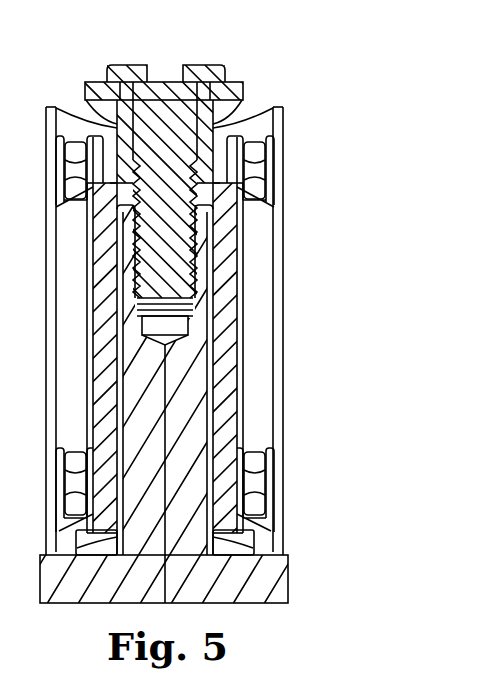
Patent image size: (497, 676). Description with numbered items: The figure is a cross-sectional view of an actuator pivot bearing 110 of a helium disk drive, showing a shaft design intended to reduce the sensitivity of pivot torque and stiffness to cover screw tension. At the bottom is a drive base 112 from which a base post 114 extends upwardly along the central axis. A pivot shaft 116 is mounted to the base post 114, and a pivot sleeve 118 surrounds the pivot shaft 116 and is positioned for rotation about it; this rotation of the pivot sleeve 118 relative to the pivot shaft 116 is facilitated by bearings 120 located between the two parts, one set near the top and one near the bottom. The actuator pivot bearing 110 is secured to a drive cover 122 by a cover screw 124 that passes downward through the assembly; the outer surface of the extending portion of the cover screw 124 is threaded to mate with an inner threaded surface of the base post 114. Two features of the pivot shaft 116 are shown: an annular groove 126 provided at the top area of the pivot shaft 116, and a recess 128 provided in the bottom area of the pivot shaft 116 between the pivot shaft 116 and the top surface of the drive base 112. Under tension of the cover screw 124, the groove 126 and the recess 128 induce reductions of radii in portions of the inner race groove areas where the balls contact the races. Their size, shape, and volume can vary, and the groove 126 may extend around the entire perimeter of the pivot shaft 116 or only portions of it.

The actuator pivot bearing 110 is at (314, 95).
The drive base 112 is at (272, 582).
The base post 114 is at (190, 445).
The pivot shaft 116 is at (222, 270).
The pivot sleeve 118 is at (265, 317).
The bearings 120 is at (266, 494).
The drive cover 122 is at (228, 90).
The cover screw 124 is at (128, 72).
The annular groove 126 is at (217, 163).
The recess 128 is at (262, 538).